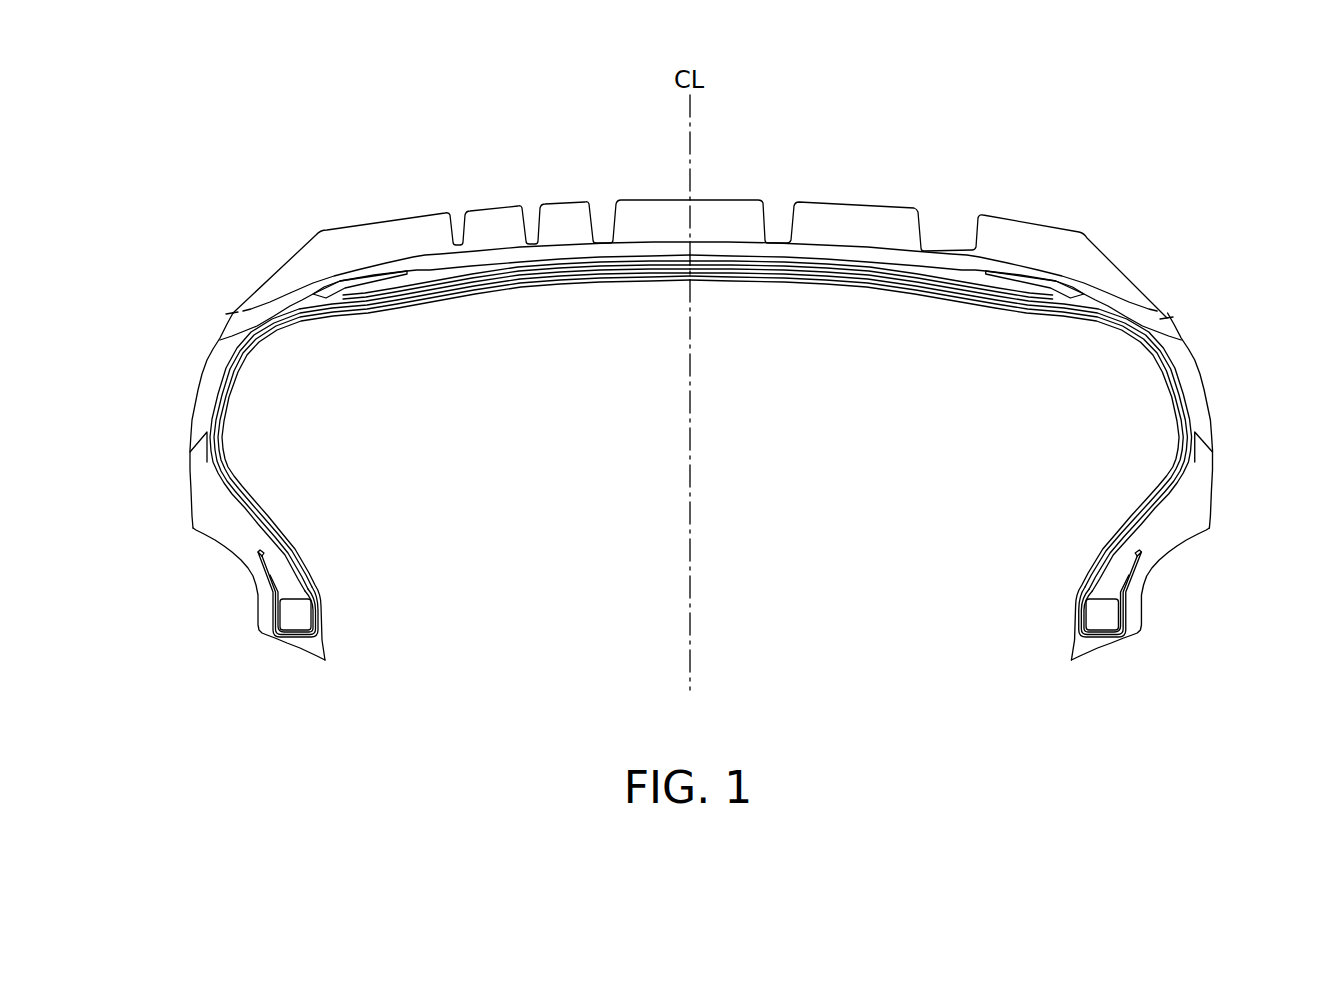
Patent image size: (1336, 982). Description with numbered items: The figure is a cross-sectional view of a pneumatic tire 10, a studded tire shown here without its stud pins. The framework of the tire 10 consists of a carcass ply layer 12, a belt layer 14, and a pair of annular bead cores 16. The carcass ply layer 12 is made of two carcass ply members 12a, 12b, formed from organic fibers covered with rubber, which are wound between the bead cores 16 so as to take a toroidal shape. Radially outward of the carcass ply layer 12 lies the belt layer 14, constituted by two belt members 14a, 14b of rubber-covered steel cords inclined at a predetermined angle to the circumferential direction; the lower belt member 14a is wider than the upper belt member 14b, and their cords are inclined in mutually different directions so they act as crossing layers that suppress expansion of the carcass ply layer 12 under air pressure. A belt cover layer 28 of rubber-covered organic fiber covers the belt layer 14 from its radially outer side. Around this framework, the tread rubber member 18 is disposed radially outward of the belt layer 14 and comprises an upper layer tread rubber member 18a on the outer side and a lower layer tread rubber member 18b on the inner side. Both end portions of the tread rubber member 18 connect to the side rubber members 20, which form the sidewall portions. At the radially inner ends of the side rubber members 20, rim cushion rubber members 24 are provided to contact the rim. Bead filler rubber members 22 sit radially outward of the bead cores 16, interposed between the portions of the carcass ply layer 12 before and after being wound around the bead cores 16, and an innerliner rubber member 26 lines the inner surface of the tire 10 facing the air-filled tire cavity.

The pneumatic tire 10 is at (1112, 206).
The carcass ply layer 12 is at (701, 453).
The carcass ply member 12a is at (1153, 372).
The carcass ply member 12b is at (1143, 347).
The belt layer 14 is at (698, 205).
The belt member 14a is at (865, 273).
The belt member 14b is at (905, 270).
The bead core 16 is at (293, 613).
The tread rubber member 18 is at (735, 259).
The upper layer tread rubber member 18a is at (1078, 249).
The lower layer tread rubber member 18b is at (1078, 281).
The side rubber member 20 is at (210, 378).
The bead filler rubber member 22 is at (283, 574).
The rim cushion rubber member 24 is at (213, 508).
The innerliner rubber member 26 is at (648, 281).
The belt cover layer 28 is at (365, 275).